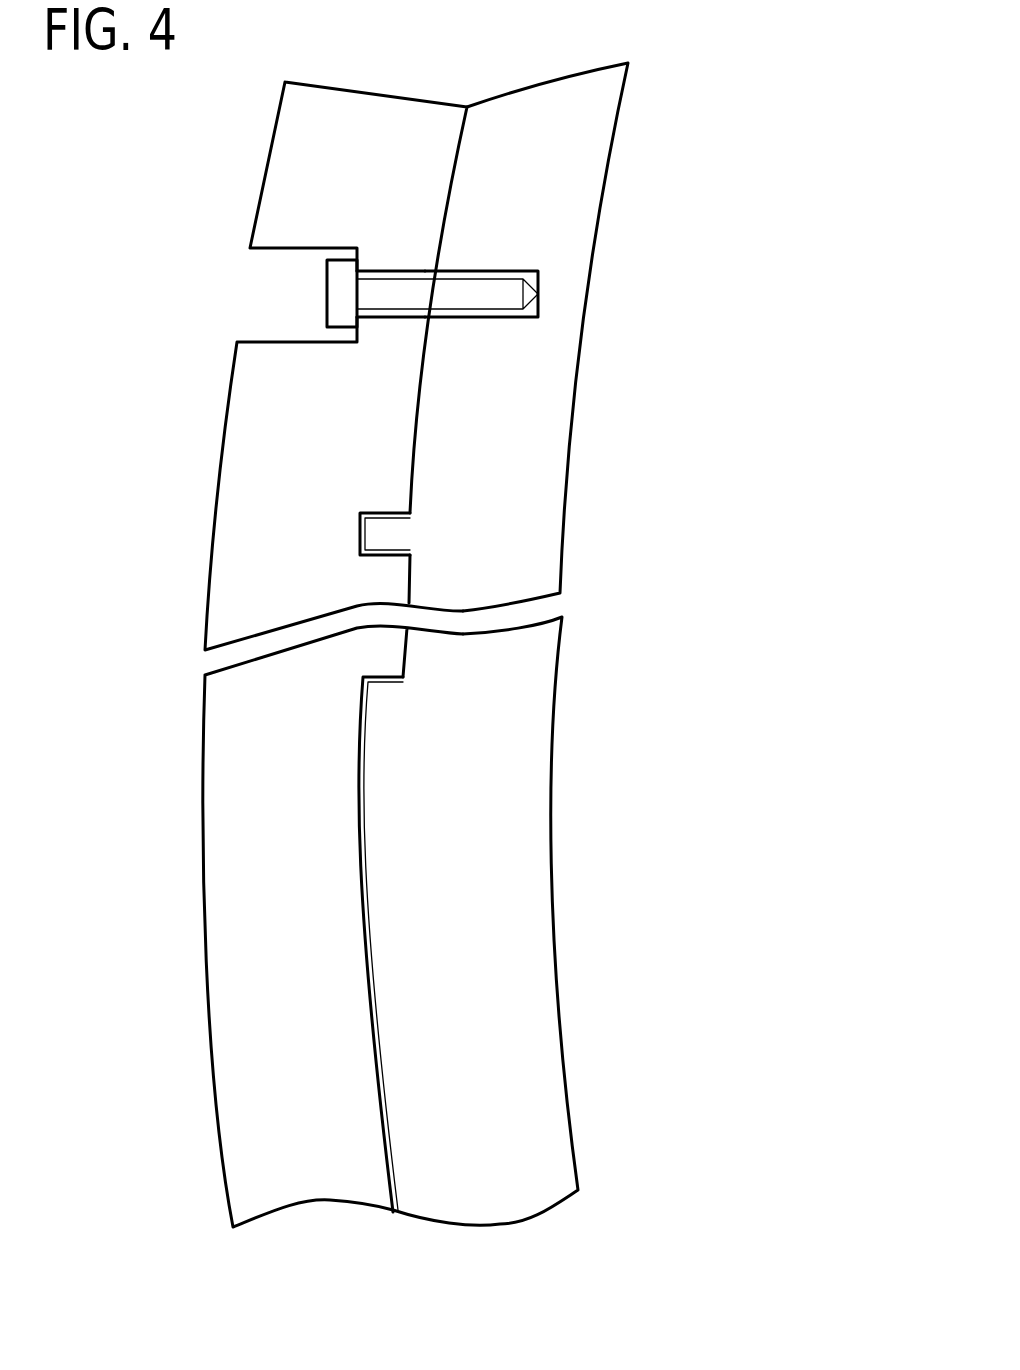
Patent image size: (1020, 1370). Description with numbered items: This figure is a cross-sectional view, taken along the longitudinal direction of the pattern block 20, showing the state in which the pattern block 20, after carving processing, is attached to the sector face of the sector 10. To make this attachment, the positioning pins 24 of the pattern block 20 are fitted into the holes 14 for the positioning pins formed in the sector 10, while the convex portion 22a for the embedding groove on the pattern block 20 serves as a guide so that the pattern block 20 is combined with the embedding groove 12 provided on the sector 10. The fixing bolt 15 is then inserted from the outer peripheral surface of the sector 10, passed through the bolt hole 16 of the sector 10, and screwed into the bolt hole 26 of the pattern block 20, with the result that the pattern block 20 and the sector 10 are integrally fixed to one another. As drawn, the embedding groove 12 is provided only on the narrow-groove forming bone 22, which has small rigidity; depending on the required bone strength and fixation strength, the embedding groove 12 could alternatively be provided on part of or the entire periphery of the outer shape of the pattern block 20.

The sector 10 is at (350, 130).
The embedding groove 12 is at (363, 988).
The hole for positioning pin 14 is at (388, 557).
The fixing bolt 15 is at (348, 297).
The bolt hole 16 is at (403, 272).
The pattern block 20 is at (602, 110).
The narrow-groove forming bone 22 is at (445, 905).
The convex portion for embedding groove 22a is at (380, 695).
The positioning pin 24 is at (385, 538).
The bolt hole 26 is at (503, 272).